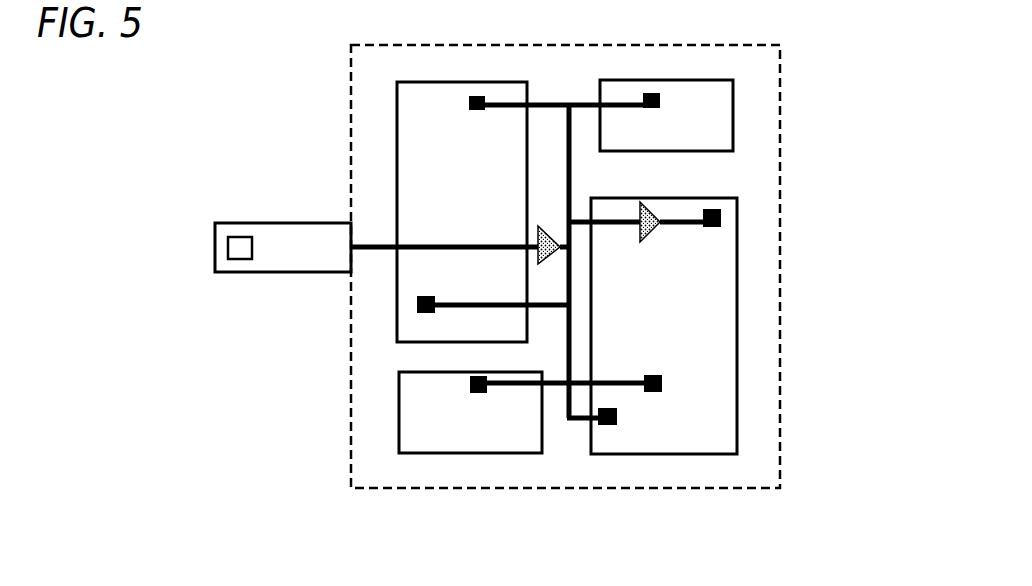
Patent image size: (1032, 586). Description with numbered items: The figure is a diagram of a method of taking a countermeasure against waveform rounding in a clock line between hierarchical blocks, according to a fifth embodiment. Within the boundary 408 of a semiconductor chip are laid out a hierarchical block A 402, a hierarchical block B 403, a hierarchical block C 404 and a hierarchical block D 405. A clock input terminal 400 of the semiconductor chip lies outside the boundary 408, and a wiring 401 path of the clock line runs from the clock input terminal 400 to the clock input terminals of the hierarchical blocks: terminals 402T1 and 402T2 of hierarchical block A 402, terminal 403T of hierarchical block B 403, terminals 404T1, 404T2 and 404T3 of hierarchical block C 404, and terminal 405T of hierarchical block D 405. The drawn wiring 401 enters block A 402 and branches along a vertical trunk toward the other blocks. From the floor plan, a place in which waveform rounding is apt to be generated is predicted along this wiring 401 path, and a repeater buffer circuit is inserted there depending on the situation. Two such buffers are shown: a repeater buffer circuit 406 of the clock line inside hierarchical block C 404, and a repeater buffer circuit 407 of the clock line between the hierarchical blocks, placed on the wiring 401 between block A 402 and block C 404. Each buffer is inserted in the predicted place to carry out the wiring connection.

The clock input terminal 400 is at (228, 223).
The wiring 401 is at (388, 246).
The hierarchical block A 402 is at (417, 82).
The first terminal of block 402 402T1 is at (437, 292).
The second terminal of block 402 402T2 is at (469, 110).
The second circuit block 403 is at (640, 80).
The terminal of block 403 403T is at (660, 108).
The hierarchical block C 404 is at (720, 198).
The first terminal of block 404 404T1 is at (617, 422).
The second terminal of block 404 404T2 is at (660, 392).
The third terminal of block 404 404T3 is at (721, 220).
The hierarchical block D 405 is at (530, 453).
The terminal of block 405 405T is at (475, 393).
The repeater buffer circuit 406 is at (657, 232).
The repeater buffer circuit 407 is at (552, 258).
The boundary 408 is at (385, 492).